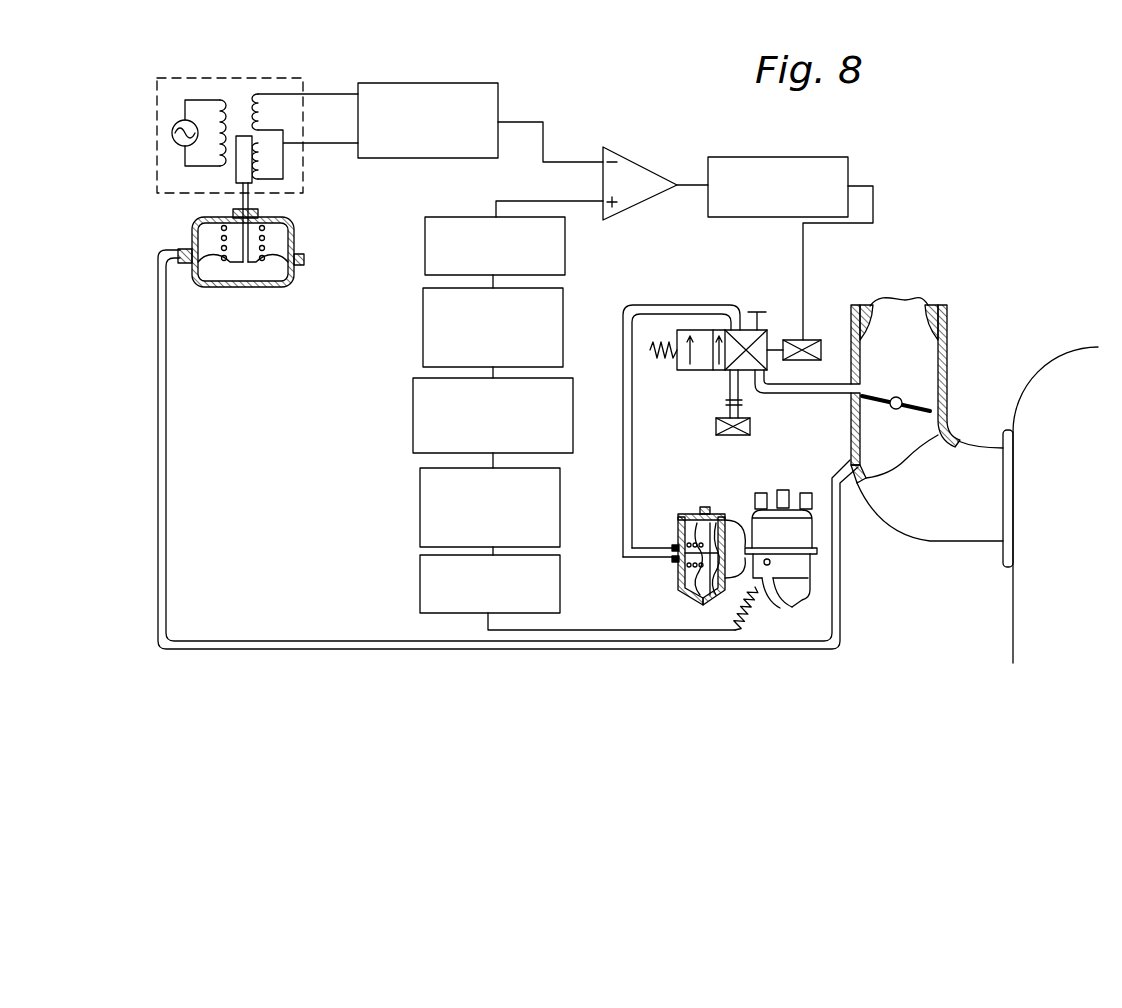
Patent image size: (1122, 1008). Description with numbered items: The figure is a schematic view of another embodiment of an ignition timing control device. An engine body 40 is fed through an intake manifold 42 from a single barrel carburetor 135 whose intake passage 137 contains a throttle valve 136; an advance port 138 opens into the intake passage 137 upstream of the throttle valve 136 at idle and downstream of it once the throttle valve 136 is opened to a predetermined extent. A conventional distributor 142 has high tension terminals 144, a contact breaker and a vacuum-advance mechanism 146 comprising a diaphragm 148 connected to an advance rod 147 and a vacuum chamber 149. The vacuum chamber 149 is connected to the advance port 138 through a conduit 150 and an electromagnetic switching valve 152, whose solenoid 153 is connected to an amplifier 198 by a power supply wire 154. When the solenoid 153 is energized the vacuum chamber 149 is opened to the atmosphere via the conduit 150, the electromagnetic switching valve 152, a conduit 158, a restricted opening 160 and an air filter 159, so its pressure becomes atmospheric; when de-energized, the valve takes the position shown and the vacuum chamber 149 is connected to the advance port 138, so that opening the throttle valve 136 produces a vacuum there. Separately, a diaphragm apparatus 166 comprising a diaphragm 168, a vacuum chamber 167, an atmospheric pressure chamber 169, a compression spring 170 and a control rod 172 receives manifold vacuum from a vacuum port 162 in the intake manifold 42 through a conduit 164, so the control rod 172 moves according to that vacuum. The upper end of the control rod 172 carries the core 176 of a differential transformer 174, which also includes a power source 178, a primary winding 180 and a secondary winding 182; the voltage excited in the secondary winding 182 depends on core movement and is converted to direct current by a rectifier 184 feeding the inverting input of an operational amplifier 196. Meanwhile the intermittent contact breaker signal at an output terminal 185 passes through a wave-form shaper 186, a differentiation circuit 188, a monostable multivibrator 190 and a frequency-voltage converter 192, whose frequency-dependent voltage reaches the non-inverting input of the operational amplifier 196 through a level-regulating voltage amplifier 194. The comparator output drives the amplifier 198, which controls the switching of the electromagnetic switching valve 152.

The engine body 40 is at (1053, 358).
The intake manifold 42 is at (915, 497).
The carburetor 135 is at (915, 312).
The throttle valve 136 is at (935, 405).
The intake passage 137 is at (915, 375).
The advance port 138 is at (853, 355).
The distributor 142 is at (801, 568).
The high tension terminals 144 is at (758, 510).
The vacuum-advance mechanism 146 is at (690, 520).
The advance rod 147 is at (717, 540).
The diaphragm 148 is at (703, 508).
The vacuum chamber 149 is at (678, 582).
The conduit 150 is at (636, 440).
The electromagnetic switching valve 152 is at (693, 380).
The solenoid 153 is at (804, 343).
The power supply wire 154 is at (804, 242).
The conduit 158 is at (742, 402).
The air filter 159 is at (750, 430).
The restricted opening 160 is at (728, 404).
The vacuum port 162 is at (866, 476).
The conduit 164 is at (766, 650).
The diaphragm apparatus 166 is at (208, 296).
The vacuum chamber 167 is at (280, 238).
The diaphragm 168 is at (304, 258).
The atmospheric pressure chamber 169 is at (268, 273).
The compression spring 170 is at (195, 225).
The control rod 172 is at (250, 195).
The differential transformer 174 is at (226, 78).
The core 176 is at (236, 172).
The power source 178 is at (172, 131).
The primary winding 180 is at (218, 122).
The secondary winding 182 is at (262, 110).
The rectifier 184 is at (468, 84).
The output terminal 185 is at (753, 604).
The wave-form shaper 186 is at (420, 601).
The differentiation circuit 188 is at (420, 530).
The monostable multivibrator 190 is at (413, 443).
The frequency-voltage converter 192 is at (423, 352).
The voltage amplifier 194 is at (425, 268).
The operational amplifier 196 is at (655, 170).
The amplifier 198 is at (761, 157).